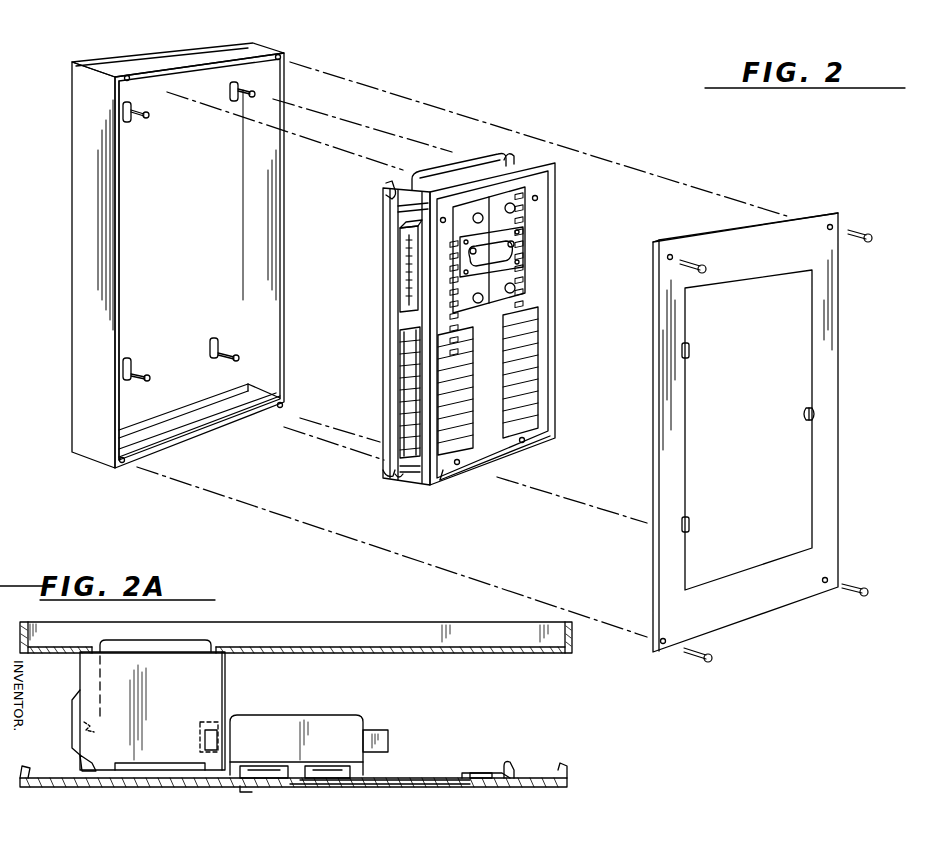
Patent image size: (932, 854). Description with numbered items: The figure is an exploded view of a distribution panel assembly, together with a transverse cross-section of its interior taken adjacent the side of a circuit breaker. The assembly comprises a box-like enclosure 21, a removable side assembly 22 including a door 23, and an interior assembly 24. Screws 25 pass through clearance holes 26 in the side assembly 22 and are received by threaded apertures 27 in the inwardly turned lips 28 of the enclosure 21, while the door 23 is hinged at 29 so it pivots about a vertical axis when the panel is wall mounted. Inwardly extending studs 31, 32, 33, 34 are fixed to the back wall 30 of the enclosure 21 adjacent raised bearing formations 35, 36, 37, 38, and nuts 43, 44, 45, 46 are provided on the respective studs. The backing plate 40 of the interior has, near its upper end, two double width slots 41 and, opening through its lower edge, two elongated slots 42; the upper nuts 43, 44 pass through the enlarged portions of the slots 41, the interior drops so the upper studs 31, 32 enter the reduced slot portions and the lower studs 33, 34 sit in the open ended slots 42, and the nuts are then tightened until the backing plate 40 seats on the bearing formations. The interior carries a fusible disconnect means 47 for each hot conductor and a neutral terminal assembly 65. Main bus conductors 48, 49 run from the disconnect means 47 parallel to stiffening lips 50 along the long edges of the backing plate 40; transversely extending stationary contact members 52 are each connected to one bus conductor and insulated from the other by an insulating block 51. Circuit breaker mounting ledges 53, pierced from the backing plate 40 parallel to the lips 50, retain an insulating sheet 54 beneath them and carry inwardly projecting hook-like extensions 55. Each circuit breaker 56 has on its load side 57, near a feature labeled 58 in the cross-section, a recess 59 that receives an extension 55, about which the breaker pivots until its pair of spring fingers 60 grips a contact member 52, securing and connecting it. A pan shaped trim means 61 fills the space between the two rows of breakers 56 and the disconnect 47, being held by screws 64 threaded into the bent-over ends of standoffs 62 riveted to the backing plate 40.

In FIG. 2, the box-like enclosure 21 is at (212, 42).
In FIG. 2, the removable side assembly 22 is at (816, 208).
In FIG. 2, the door 23 is at (766, 444).
In FIG. 2, the interior assembly 24 is at (552, 130).
In FIG. 2, the screws 25 is at (702, 262).
In FIG. 2, the clearance holes 26 is at (672, 254).
In FIG. 2, the threaded apertures 27 is at (127, 75).
In FIG. 2, the inwardly turned lips 28 is at (178, 40).
In FIG. 2, the hinge 29 is at (692, 350).
In FIG. 2, the back wall 30 is at (194, 260).
In FIG. 2, the upper stud 31 is at (131, 108).
In FIG. 2, the upper stud 32 is at (244, 92).
In FIG. 2, the lower stud 33 is at (223, 362).
In FIG. 2, the lower stud 34 is at (129, 383).
In FIG. 2, the raised bearing formation 35 is at (128, 124).
In FIG. 2, the raised bearing formation 36 is at (230, 96).
In FIG. 2, the raised bearing formation 37 is at (218, 338).
In FIG. 2, the raised bearing formation 38 is at (131, 360).
In FIG. 2, the backing plate 40 is at (434, 172).
In FIG. 2, the double width slots 41 is at (390, 184).
In FIG. 2, the elongated slots 42 is at (528, 218).
In FIG. 2, the nut 43 is at (150, 114).
In FIG. 2, the nut 44 is at (250, 100).
In FIG. 2, the nut 45 is at (228, 358).
In FIG. 2, the nut 46 is at (150, 377).
In FIG. 2, the fusible disconnect means 47 is at (528, 276).
In FIG. 2A, the main bus conductor 48 is at (248, 786).
In FIG. 2A, the main bus conductor 49 is at (324, 782).
In FIG. 2, the stiffening lips 50 is at (386, 366).
In FIG. 2A, the stiffening lips 50 is at (25, 768).
In FIG. 2A, the insulating block 51 is at (318, 712).
In FIG. 2A, the stationary contact members 52 is at (217, 718).
In FIG. 2A, the circuit breaker mounting ledges 53 is at (490, 772).
In FIG. 2A, the insulating sheet 54 is at (430, 777).
In FIG. 2A, the hook-like extensions 55 is at (508, 764).
In FIG. 2, the circuit breakers 56 is at (470, 330).
In FIG. 2A, the circuit breakers 56 is at (232, 690).
In FIG. 2, the load side 57 is at (404, 380).
In FIG. 2A, the load side 57 is at (82, 660).
In FIG. 2, the rail tab 58 is at (400, 337).
In FIG. 2A, the rail tab 58 is at (84, 724).
In FIG. 2A, the recess 59 is at (80, 766).
In FIG. 2A, the spring fingers 60 is at (200, 734).
In FIG. 2, the trim means 61 is at (508, 457).
In FIG. 2A, the trim means 61 is at (336, 622).
In FIG. 2, the standoffs 62 is at (398, 214).
In FIG. 2, the screws 64 is at (459, 464).
In FIG. 2, the neutral terminal assembly 65 is at (400, 271).